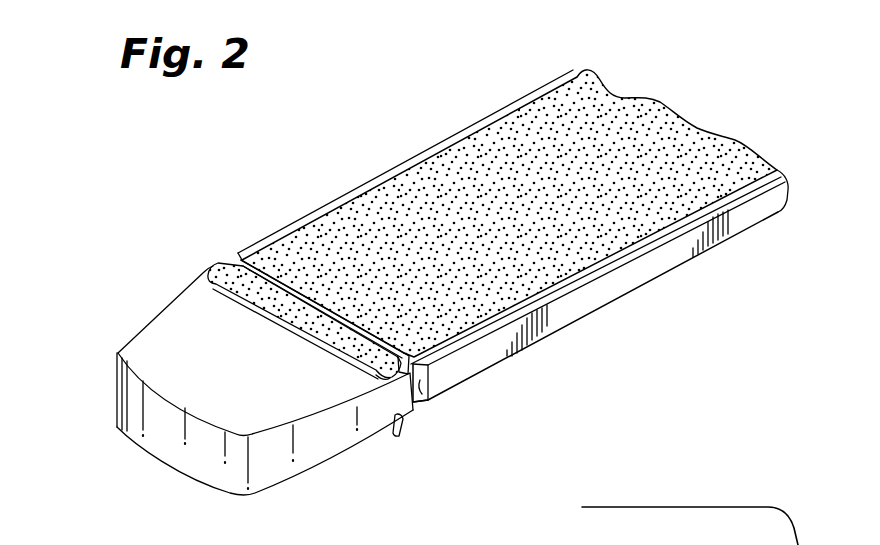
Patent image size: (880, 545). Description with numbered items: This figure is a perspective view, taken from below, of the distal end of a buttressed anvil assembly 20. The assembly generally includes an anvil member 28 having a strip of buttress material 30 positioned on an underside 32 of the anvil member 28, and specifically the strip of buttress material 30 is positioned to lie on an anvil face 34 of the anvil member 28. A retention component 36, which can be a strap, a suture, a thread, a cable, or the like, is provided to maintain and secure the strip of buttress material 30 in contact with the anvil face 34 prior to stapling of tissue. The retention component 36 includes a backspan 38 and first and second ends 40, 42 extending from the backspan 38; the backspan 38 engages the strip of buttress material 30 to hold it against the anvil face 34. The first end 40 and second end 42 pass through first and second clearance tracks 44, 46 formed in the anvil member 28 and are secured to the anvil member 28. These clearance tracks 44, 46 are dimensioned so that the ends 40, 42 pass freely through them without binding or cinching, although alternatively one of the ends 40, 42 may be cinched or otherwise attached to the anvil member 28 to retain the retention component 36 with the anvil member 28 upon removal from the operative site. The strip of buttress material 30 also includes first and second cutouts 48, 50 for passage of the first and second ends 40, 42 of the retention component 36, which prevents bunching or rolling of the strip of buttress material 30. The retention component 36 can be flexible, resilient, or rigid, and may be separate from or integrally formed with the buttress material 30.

The buttressed anvil assembly 20 is at (63, 193).
The anvil member 28 is at (107, 307).
The strip of buttress material 30 is at (630, 120).
The underside 32 is at (147, 336).
The anvil face 34 is at (460, 345).
The retention component 36 is at (320, 304).
The backspan 38 is at (362, 336).
The first end 40 is at (404, 427).
The second end 42 is at (240, 263).
The first clearance track 44 is at (447, 397).
The second clearance track 46 is at (226, 257).
The first cutout 48 is at (384, 378).
The second cutout 50 is at (242, 254).